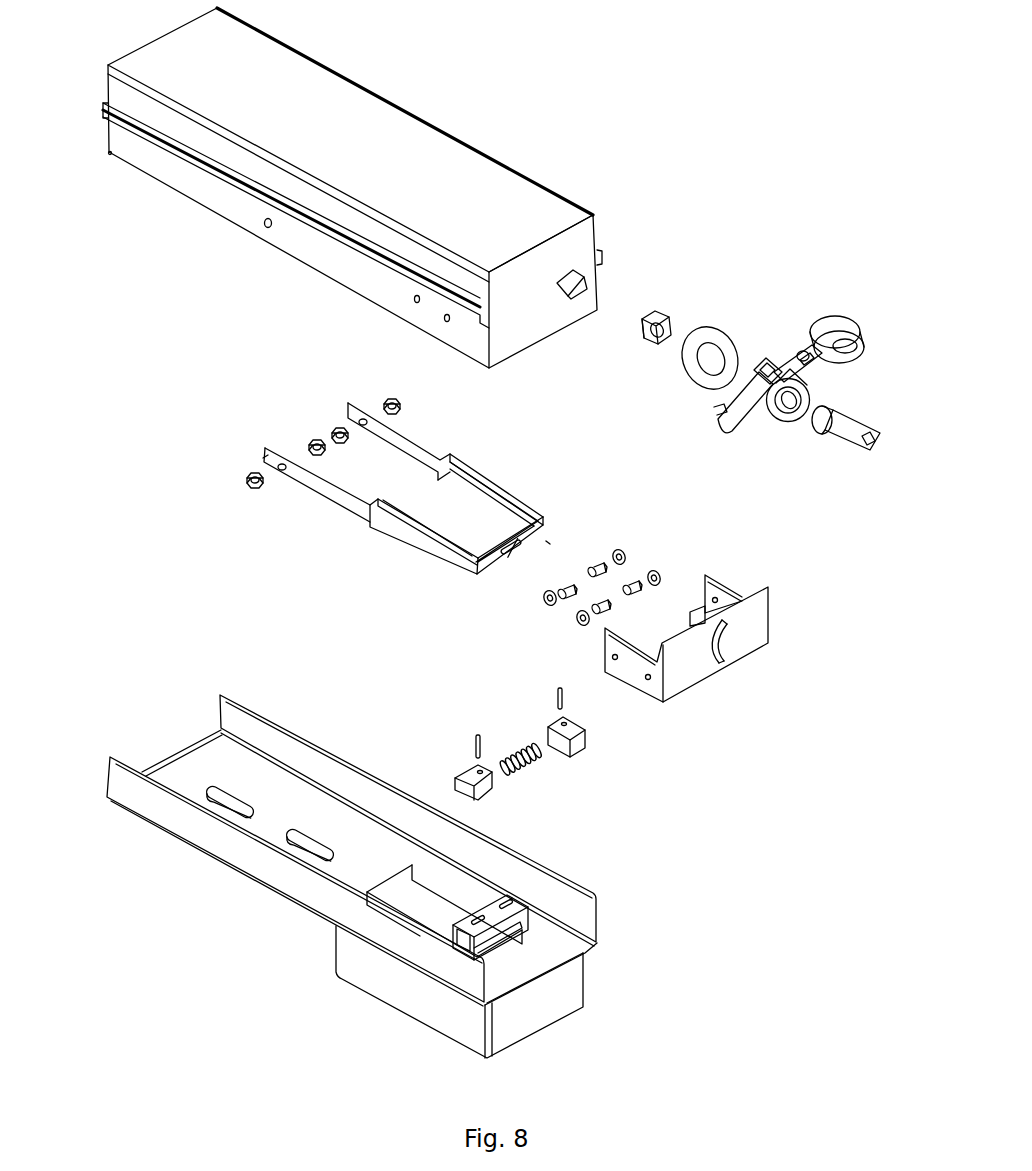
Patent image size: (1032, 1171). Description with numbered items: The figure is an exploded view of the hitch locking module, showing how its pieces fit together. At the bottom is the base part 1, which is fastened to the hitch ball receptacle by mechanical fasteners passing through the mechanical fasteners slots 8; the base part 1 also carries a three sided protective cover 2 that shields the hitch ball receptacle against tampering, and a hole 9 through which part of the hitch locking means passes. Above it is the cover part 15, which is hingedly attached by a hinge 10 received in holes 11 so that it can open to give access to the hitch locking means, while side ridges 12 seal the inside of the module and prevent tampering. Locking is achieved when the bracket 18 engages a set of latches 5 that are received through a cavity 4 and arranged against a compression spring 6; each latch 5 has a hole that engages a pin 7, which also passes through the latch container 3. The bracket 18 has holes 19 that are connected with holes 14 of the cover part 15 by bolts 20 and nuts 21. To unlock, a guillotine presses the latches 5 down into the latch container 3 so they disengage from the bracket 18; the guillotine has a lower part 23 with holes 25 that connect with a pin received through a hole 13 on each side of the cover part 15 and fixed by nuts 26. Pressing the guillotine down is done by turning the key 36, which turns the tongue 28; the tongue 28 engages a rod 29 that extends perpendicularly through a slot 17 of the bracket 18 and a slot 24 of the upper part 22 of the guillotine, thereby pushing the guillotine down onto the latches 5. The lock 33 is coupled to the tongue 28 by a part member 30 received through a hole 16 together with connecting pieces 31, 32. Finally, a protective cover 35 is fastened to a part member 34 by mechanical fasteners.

The base part 1 is at (260, 862).
The three sided protective cover 2 is at (547, 1000).
The latch container 3 is at (510, 900).
The cavity 4 is at (463, 937).
The latches 5 is at (576, 732).
The compression spring 6 is at (527, 760).
The pin 7 is at (477, 736).
The mechanical fasteners slots 8 is at (220, 808).
The hole 9 is at (391, 870).
The hinge 10 is at (182, 750).
The holes 11 is at (110, 153).
The side ridges 12 is at (207, 177).
The hole 13 is at (264, 227).
The holes 14 is at (414, 302).
The cover part 15 is at (400, 143).
The hole 16 is at (567, 271).
The slot 17 is at (720, 662).
The bracket 18 is at (758, 623).
The holes 19 is at (612, 657).
The bolts 20 is at (606, 569).
The nuts 21 is at (627, 558).
The upper part 22 is at (457, 553).
The lower part 23 is at (330, 496).
The slot 24 is at (548, 544).
The holes 25 is at (263, 461).
The nuts 26 is at (246, 482).
The tongue 28 is at (720, 428).
The rod 29 is at (764, 365).
The part member 30 is at (803, 343).
The connecting piece 31 is at (668, 320).
The connecting piece 32 is at (727, 324).
The lock 33 is at (780, 421).
The part member 34 is at (805, 378).
The protective cover 35 is at (857, 316).
The key 36 is at (843, 418).